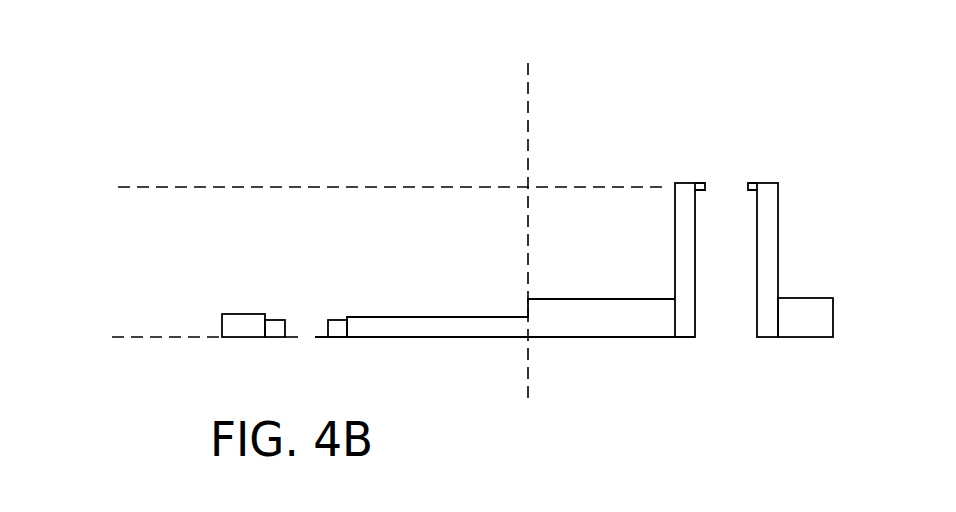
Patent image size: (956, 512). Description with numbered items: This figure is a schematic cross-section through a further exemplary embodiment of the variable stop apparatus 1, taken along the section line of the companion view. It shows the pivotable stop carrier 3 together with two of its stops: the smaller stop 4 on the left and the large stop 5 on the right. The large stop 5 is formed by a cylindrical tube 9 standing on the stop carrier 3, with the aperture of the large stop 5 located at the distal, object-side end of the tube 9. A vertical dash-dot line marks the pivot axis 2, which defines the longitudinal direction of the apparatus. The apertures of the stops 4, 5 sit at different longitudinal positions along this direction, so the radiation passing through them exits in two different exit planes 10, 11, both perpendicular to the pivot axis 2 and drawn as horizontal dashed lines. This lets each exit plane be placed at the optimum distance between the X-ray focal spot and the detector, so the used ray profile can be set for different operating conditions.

The variable stop apparatus 1 is at (282, 152).
The pivot axis 2 is at (532, 93).
The stop carrier 3 is at (800, 312).
The stop 4 is at (318, 309).
The large stop 5 is at (791, 214).
The tube 9 is at (768, 228).
The exit plane 10 is at (143, 340).
The exit plane 11 is at (145, 190).